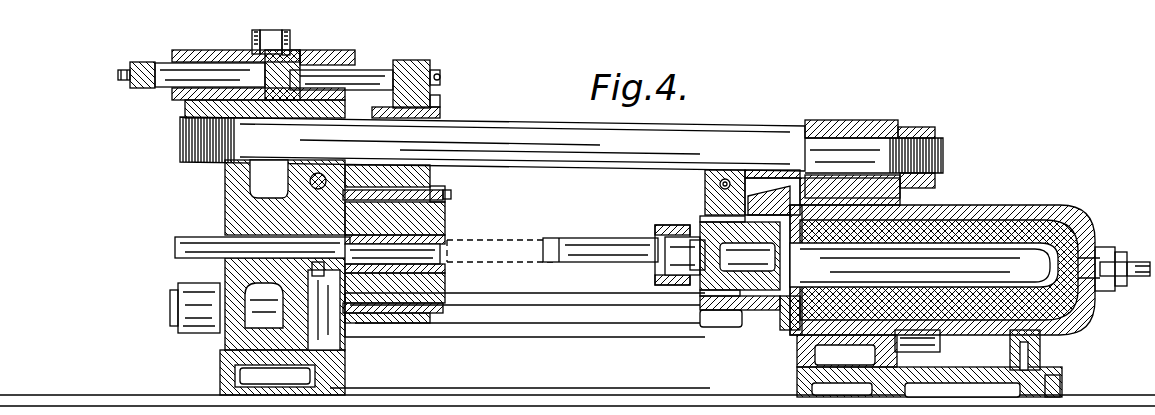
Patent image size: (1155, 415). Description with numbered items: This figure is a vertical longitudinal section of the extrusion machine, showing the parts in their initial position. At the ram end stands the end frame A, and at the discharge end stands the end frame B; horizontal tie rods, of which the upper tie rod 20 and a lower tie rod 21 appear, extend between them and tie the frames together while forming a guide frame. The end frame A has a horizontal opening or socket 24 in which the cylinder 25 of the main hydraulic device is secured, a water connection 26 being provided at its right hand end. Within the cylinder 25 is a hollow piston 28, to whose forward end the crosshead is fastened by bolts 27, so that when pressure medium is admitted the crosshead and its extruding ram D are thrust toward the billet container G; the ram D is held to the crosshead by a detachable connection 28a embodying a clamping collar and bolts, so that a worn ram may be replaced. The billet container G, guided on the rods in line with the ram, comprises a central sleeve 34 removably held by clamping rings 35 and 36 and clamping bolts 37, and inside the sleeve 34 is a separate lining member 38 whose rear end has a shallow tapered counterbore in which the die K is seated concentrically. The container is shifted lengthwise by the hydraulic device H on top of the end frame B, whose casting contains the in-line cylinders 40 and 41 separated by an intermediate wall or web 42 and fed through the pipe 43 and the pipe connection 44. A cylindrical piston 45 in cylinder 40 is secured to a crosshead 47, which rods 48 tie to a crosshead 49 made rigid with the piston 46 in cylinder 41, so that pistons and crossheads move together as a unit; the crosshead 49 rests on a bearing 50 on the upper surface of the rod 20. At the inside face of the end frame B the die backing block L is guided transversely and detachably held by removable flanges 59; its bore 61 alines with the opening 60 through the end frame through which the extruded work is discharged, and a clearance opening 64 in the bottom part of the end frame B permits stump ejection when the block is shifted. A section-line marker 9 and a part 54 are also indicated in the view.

The section line 9 is at (366, 52).
The upper tie rod 20 is at (512, 138).
The tie rod 21 is at (543, 303).
The horizontal opening or socket 24 is at (905, 207).
The cylinder 25 is at (1005, 210).
The water connection 26 is at (1133, 256).
The bolts 27 is at (700, 224).
The hollow piston 28 is at (1052, 216).
The detachable connection 28a is at (670, 228).
The sleeve 34 is at (446, 238).
The clamping ring 35 is at (432, 186).
The clamping ring 36 is at (446, 192).
The clamping bolts 37 is at (452, 196).
The lining member 38 is at (447, 268).
The cylinder 40 is at (222, 56).
The cylinder 41 is at (318, 55).
The intermediate wall or web 42 is at (268, 60).
The pipe 43 is at (252, 35).
The pipe connection 44 is at (292, 35).
The cylindrical piston 45 is at (170, 72).
The piston 46 is at (378, 72).
The crosshead 47 is at (140, 88).
The rods 48 is at (118, 75).
The crosshead 49 is at (414, 63).
The bearing 50 is at (440, 110).
The pin 54 is at (318, 172).
The removable flanges 59 is at (333, 300).
The opening 60 is at (242, 240).
The bore 61 is at (240, 270).
The clearance opening 64 is at (338, 340).
The end frame A is at (870, 147).
The end frame B is at (272, 277).
The extruding ram D is at (600, 244).
The billet container G is at (712, 200).
The hydraulic device H is at (310, 65).
The die K is at (432, 224).
The die backing block L is at (312, 222).